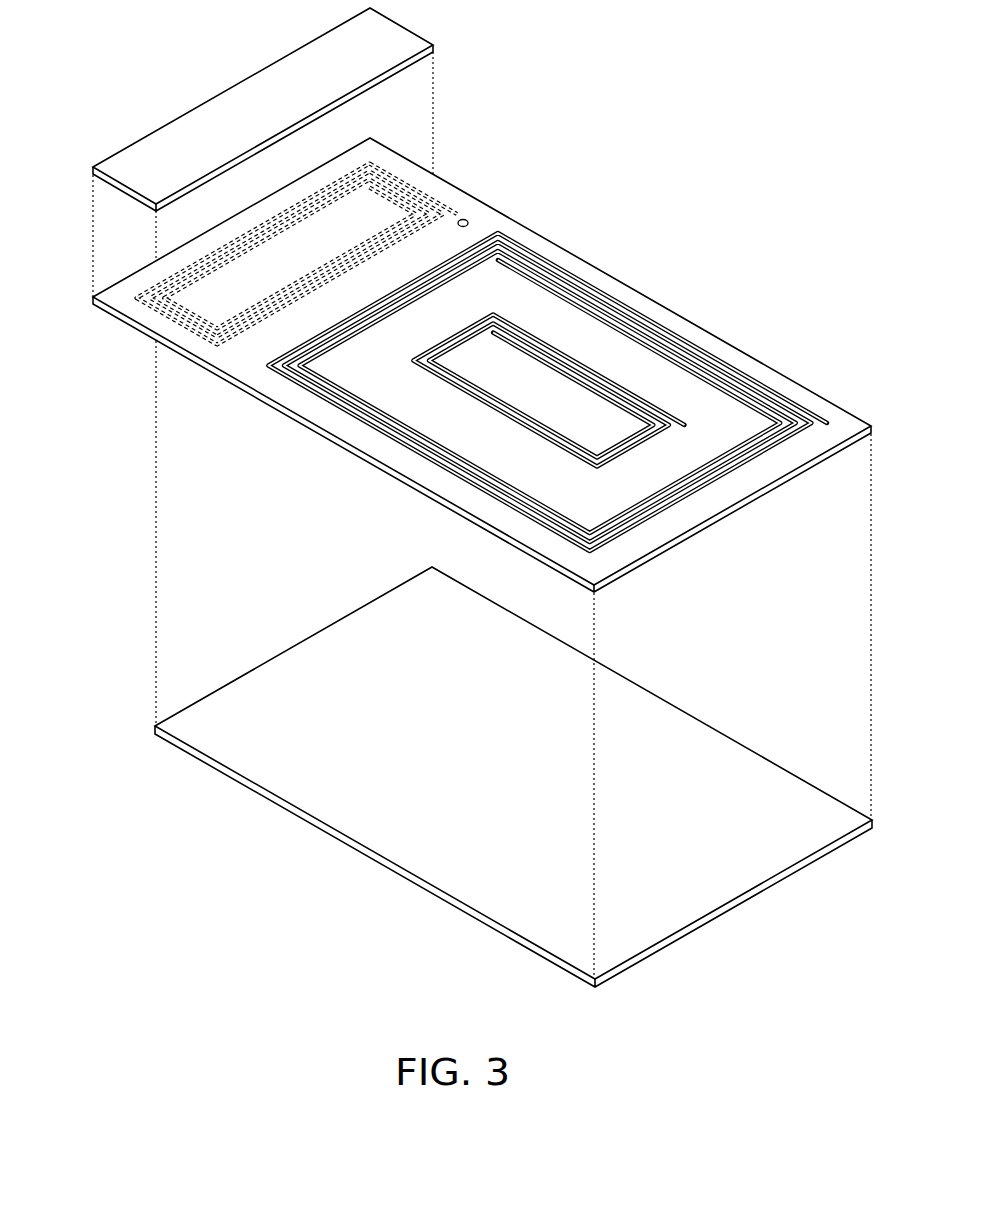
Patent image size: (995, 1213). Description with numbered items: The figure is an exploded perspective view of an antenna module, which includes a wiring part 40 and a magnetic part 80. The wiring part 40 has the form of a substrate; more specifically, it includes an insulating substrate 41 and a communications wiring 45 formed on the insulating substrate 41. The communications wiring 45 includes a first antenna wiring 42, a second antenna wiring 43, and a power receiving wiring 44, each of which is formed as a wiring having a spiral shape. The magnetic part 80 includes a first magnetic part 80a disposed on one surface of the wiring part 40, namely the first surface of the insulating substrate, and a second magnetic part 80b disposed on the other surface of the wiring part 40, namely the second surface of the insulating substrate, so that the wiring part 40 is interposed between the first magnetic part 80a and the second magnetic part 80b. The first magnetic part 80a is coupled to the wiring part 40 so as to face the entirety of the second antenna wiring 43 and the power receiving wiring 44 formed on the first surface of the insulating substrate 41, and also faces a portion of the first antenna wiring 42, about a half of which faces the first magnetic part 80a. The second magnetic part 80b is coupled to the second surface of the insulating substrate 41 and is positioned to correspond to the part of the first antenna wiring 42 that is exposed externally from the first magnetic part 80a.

The wiring part 40 is at (491, 208).
The insulating substrate 41 is at (757, 375).
The first antenna wiring 42 is at (470, 221).
The second antenna wiring 43 is at (547, 376).
The power receiving wiring 44 is at (556, 334).
The communications wiring 45 is at (577, 202).
The magnetic part 80 is at (65, 413).
The first magnetic part 80a is at (222, 704).
The second magnetic part 80b is at (115, 188).